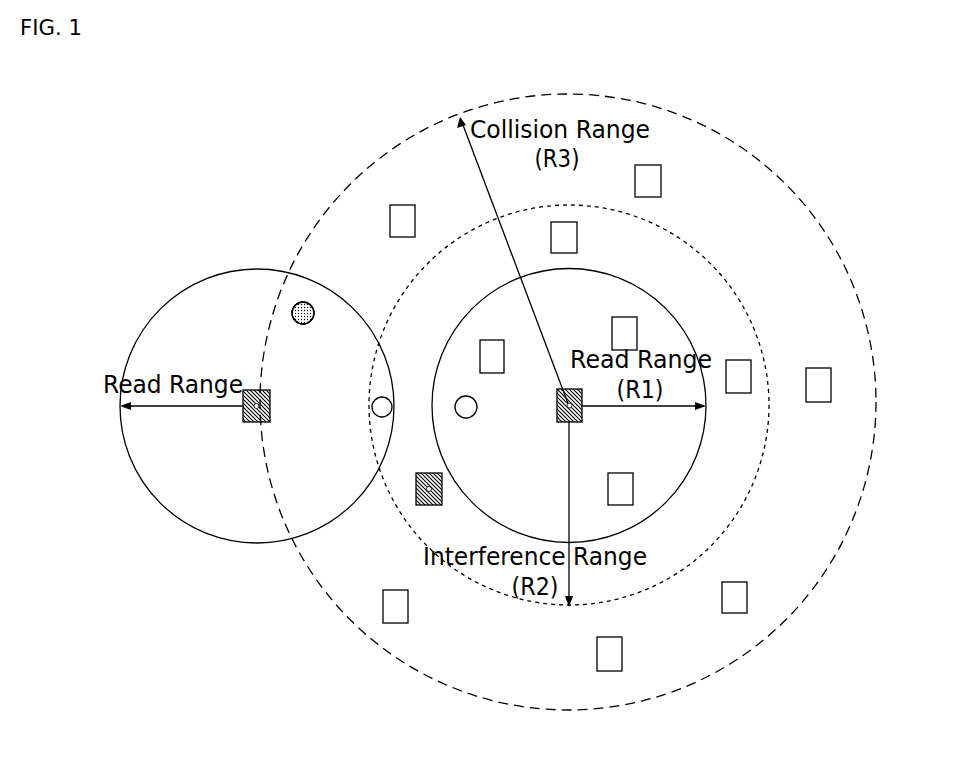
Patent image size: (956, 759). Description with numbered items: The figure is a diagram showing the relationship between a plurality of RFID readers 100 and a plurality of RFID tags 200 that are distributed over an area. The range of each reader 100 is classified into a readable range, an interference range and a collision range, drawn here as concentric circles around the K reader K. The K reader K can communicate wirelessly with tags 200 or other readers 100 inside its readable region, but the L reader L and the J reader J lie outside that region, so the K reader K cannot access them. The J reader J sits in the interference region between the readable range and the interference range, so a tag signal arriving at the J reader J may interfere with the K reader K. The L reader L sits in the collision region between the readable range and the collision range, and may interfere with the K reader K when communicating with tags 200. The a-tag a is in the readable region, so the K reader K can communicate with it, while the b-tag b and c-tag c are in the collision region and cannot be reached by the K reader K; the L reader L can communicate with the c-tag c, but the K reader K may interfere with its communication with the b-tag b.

The RFID reader 100 is at (818, 360).
The RFID tag 200 is at (286, 307).
The K reader K is at (567, 421).
The L reader L is at (256, 420).
The J reader J is at (429, 505).
The a-tag a is at (466, 419).
The b-tag b is at (382, 417).
The c-tag c is at (303, 326).